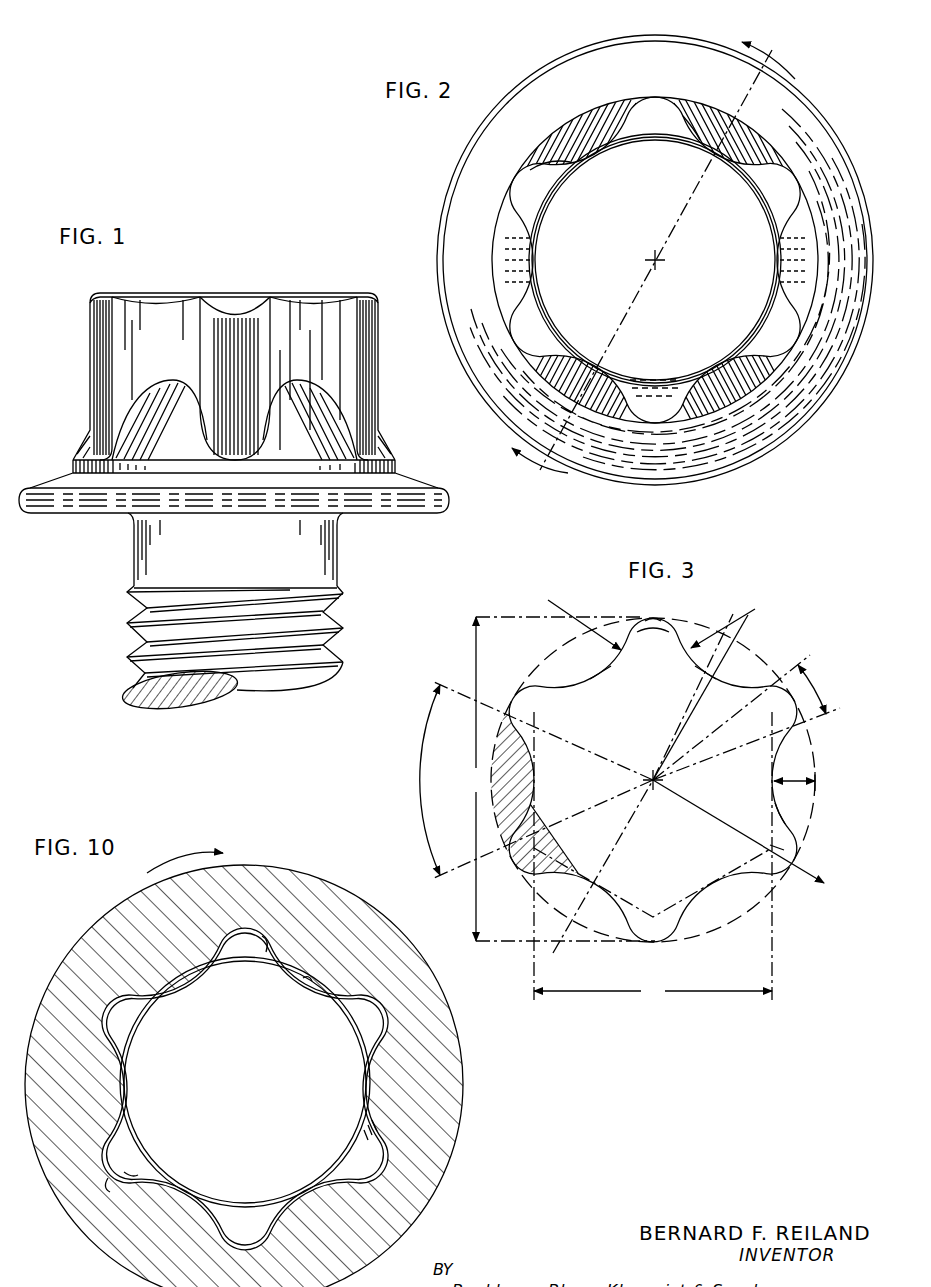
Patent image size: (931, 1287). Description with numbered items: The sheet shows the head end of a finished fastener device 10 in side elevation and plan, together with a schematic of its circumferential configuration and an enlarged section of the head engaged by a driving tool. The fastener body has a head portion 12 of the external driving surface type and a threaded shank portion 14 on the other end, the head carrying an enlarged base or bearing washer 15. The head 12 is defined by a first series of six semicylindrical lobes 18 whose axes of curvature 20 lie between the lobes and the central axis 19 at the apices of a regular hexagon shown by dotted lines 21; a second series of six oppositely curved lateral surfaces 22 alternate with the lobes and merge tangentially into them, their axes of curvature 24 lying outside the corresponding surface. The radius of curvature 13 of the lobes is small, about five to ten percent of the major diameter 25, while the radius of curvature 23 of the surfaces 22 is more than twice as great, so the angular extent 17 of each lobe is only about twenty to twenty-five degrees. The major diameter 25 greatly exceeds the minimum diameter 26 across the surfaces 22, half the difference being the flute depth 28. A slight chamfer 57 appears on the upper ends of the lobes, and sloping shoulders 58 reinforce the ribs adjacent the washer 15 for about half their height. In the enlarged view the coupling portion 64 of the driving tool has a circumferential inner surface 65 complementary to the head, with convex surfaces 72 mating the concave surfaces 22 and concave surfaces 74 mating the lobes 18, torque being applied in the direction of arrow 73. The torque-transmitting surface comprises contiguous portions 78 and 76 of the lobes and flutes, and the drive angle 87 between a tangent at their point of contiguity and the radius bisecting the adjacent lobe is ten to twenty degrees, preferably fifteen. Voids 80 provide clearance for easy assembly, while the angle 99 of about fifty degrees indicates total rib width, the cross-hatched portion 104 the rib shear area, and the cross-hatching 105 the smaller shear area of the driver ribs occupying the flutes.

In FIG. 1, the fastener device 10 is at (234, 487).
In FIG. 2, the fastener device 10 is at (636, 263).
In FIG. 1, the head portion 12 is at (234, 374).
In FIG. 2, the head portion 12 is at (663, 252).
In FIG. 10, the head portion 12 is at (238, 1089).
In FIG. 3, the radius of curvature of the lobe surfaces 13 is at (646, 619).
In FIG. 1, the threaded shank portion 14 is at (343, 629).
In FIG. 1, the bearing washer 15 is at (414, 489).
In FIG. 2, the bearing washer 15 is at (457, 216).
In FIG. 3, the angular extent of the lobes 17 is at (816, 686).
In FIG. 1, the lobes 18 is at (225, 357).
In FIG. 2, the lobes 18 is at (656, 95).
In FIG. 3, the lobes 18 is at (667, 620).
In FIG. 10, the lobes 18 is at (236, 958).
In FIG. 2, the central axis 19 is at (658, 263).
In FIG. 3, the central axis 19 is at (660, 780).
In FIG. 3, the axes of curvature of the lobe surfaces 20 is at (531, 691).
In FIG. 3, the regular hexagon 21 is at (631, 652).
In FIG. 1, the lateral surfaces 22 is at (281, 322).
In FIG. 2, the lateral surfaces 22 is at (525, 223).
In FIG. 3, the lateral surfaces 22 is at (608, 662).
In FIG. 10, the lateral surfaces 22 is at (165, 994).
In FIG. 3, the radius of curvature of the lateral surfaces 23 is at (733, 614).
In FIG. 3, the axes of curvature of the lateral surfaces 24 is at (548, 600).
In FIG. 3, the major diameter 25 is at (560, 779).
In FIG. 3, the minimum diameter 26 is at (653, 991).
In FIG. 2, the flute depth 28 is at (653, 263).
In FIG. 3, the flute depth 28 is at (819, 786).
In FIG. 1, the chamfer on the lobes 57 is at (103, 301).
In FIG. 2, the chamfer on the lobes 57 is at (677, 137).
In FIG. 10, the chamfer on the lobes 57 is at (361, 1153).
In FIG. 1, the shoulders 58 is at (82, 433).
In FIG. 2, the shoulders 58 is at (505, 266).
In FIG. 10, the coupling portion of the driving tool 64 is at (277, 878).
In FIG. 10, the circumferential inner surface 65 is at (361, 1088).
In FIG. 10, the convex surfaces of the driver 72 is at (306, 981).
In FIG. 10, the arrow indicating driving direction 73 is at (193, 858).
In FIG. 10, the concave surfaces of the driver 74 is at (264, 958).
In FIG. 3, the driving surface portion of the lateral surface 76 is at (778, 812).
In FIG. 10, the driving surface portion of the lateral surface 76 is at (138, 1173).
In FIG. 3, the driving surface portion of the lobe 78 is at (771, 845).
In FIG. 10, the driving surface portion of the lobe 78 is at (107, 1180).
In FIG. 10, the voids 80 is at (116, 1139).
In FIG. 3, the drive angle 87 is at (820, 852).
In FIG. 3, the rib width angle 99 is at (531, 780).
In FIG. 3, the cross-hatched rib shear area 104 is at (496, 759).
In FIG. 3, the cross-hatched driver rib shear area 105 is at (553, 838).